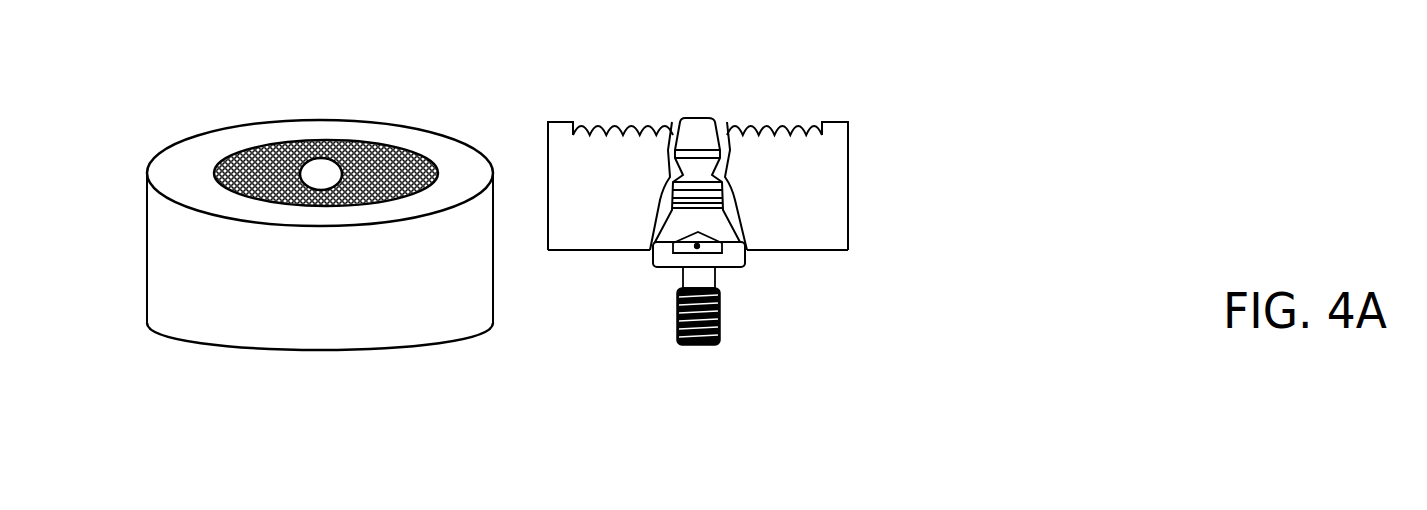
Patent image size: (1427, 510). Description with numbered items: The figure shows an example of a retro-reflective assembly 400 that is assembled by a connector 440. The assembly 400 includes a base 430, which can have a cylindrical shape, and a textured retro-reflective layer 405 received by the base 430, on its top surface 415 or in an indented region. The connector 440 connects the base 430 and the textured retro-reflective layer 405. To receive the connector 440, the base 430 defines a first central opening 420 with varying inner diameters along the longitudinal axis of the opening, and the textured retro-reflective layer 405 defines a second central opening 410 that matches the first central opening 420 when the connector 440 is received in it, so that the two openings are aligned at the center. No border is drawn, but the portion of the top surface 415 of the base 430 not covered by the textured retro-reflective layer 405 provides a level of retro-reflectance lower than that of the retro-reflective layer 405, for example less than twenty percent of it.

The retro-reflective assembly 400 is at (1025, 123).
The textured retro-reflective layer 405 is at (249, 149).
The second central opening 410 is at (341, 155).
The top surface 415 is at (184, 186).
The first central opening 420 is at (749, 207).
The base 430 is at (412, 289).
The connector 440 is at (746, 260).